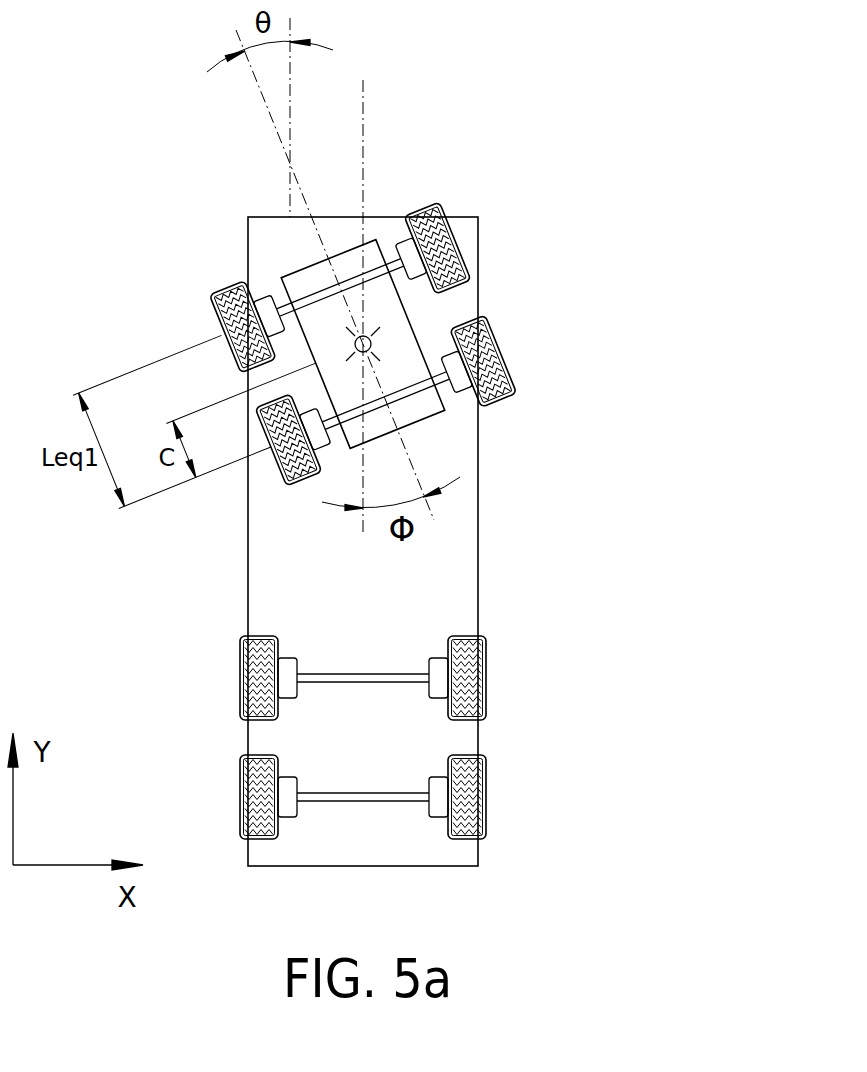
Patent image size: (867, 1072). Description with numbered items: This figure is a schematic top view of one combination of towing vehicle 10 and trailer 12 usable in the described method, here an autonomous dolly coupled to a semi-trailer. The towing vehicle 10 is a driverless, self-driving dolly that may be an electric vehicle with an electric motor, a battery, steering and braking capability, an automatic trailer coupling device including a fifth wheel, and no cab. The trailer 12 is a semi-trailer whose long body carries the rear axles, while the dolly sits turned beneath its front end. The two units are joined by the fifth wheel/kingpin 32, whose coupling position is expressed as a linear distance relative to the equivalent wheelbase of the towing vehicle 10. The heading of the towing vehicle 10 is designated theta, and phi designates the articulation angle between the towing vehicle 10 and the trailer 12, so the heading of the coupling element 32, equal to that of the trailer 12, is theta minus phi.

The towing vehicle 10 is at (437, 418).
The trailer 12 is at (248, 545).
The fifth wheel/kingpin 32 is at (372, 349).